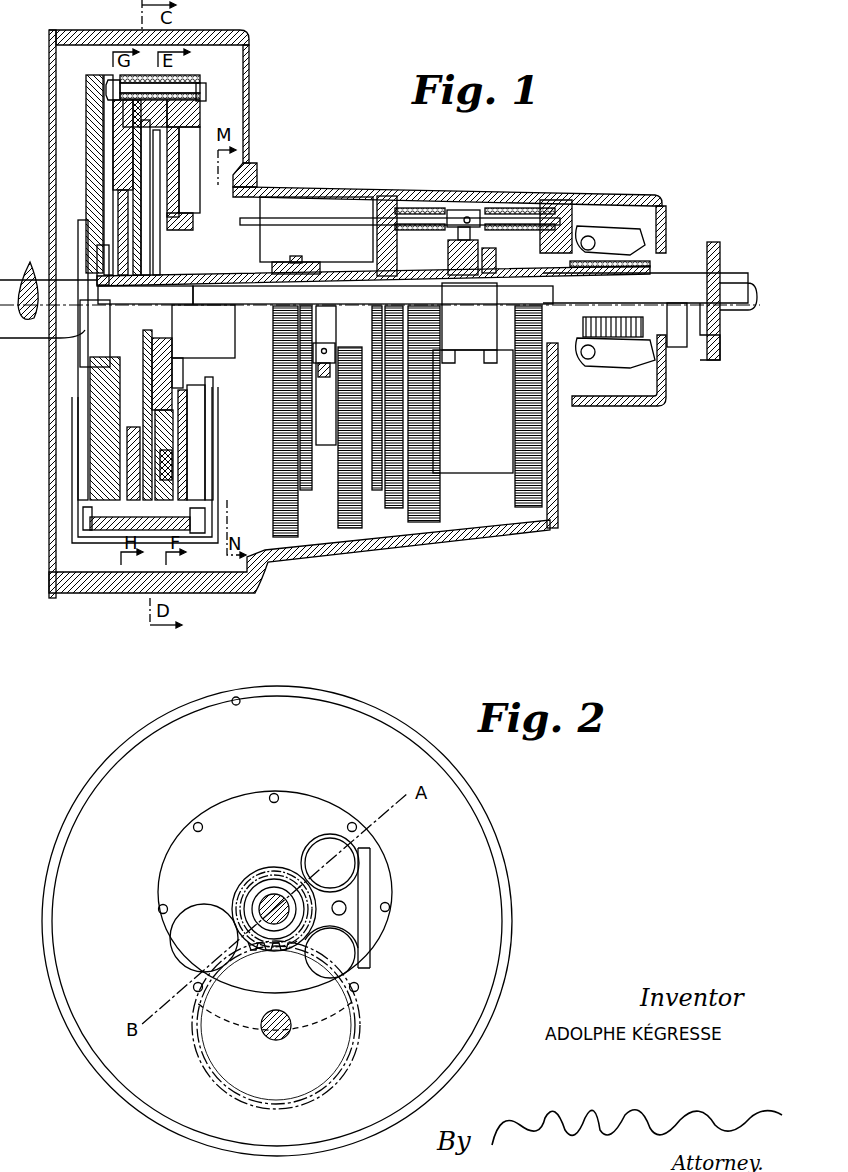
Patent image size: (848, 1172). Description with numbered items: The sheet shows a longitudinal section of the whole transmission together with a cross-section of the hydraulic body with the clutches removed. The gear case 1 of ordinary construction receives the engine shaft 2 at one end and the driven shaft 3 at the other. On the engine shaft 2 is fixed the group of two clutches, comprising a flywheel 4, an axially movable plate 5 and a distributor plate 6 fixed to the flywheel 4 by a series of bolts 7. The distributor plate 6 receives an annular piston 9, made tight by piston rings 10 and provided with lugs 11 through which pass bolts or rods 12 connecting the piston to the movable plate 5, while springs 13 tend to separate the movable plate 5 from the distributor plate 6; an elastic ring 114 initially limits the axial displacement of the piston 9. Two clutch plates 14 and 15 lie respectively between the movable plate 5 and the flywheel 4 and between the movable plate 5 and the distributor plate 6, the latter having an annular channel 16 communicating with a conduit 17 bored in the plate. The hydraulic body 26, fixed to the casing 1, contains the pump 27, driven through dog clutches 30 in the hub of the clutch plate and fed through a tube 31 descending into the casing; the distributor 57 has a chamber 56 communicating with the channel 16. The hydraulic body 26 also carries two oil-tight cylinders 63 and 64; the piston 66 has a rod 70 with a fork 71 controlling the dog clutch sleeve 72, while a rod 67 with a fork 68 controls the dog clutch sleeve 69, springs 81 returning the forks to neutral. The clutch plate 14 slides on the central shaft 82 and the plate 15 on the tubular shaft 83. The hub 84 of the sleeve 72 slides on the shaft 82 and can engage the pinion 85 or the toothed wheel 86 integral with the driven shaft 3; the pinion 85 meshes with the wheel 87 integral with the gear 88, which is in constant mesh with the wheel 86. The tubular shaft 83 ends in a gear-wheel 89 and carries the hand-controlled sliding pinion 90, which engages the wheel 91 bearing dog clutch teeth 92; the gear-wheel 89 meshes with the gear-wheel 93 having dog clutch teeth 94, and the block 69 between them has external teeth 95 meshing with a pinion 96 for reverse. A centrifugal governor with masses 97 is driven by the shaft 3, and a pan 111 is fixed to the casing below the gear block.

In FIG. 1, the gear case 1 is at (249, 46).
In FIG. 1, the engine shaft 2 is at (26, 287).
In FIG. 1, the driven shaft 3 is at (690, 273).
In FIG. 1, the flywheel 4 is at (90, 100).
In FIG. 1, the movable plate 5 is at (118, 132).
In FIG. 1, the distributor plate 6 is at (110, 82).
In FIG. 1, the bolts 7 is at (86, 521).
In FIG. 1, the annular piston 9 is at (202, 116).
In FIG. 1, the piston rings 10 is at (190, 522).
In FIG. 1, the lugs 11 is at (202, 84).
In FIG. 1, the bolts or rods 12 is at (172, 80).
In FIG. 1, the springs 13 is at (192, 102).
In FIG. 1, the clutch plate 14 is at (130, 146).
In FIG. 1, the clutch plate 15 is at (110, 186).
In FIG. 1, the annular channel 16 is at (84, 262).
In FIG. 1, the conduit 17 is at (145, 200).
In FIG. 1, the hydraulic body 26 is at (251, 170).
In FIG. 2, the hydraulic body 26 is at (231, 798).
In FIG. 1, the pump 27 is at (178, 291).
In FIG. 1, the dog clutches 30 is at (146, 291).
In FIG. 1, the tube 31 is at (247, 580).
In FIG. 1, the chamber 56 is at (286, 262).
In FIG. 1, the distributor 57 is at (97, 280).
In FIG. 2, the oil-tight cylinder 63 is at (341, 953).
In FIG. 1, the oil-tight cylinder 64 is at (260, 188).
In FIG. 2, the oil-tight cylinder 64 is at (345, 862).
In FIG. 1, the piston 66 is at (247, 220).
In FIG. 1, the rod 67 is at (344, 348).
In FIG. 1, the fork 68 is at (350, 356).
In FIG. 1, the dog clutch sleeve 69 is at (368, 498).
In FIG. 1, the rod 70 is at (330, 222).
In FIG. 1, the fork 71 is at (452, 236).
In FIG. 1, the dog clutch sleeve 72 is at (470, 230).
In FIG. 1, the springs 81 is at (422, 211).
In FIG. 1, the central shaft 82 is at (230, 298).
In FIG. 1, the tubular shaft 83 is at (341, 274).
In FIG. 1, the hub 84 is at (490, 262).
In FIG. 1, the pinion 85 is at (447, 386).
In FIG. 1, the toothed wheel 86 is at (528, 322).
In FIG. 1, the wheel 87 is at (437, 495).
In FIG. 1, the gear 88 is at (523, 470).
In FIG. 1, the gear-wheel 89 is at (386, 198).
In FIG. 1, the pinion 90 is at (300, 259).
In FIG. 2, the pinion 90 is at (250, 892).
In FIG. 1, the wheel 91 is at (288, 540).
In FIG. 2, the wheel 91 is at (344, 1074).
In FIG. 1, the dog clutch teeth 92 is at (308, 496).
In FIG. 1, the gear-wheel 93 is at (432, 482).
In FIG. 1, the dog clutch teeth 94 is at (390, 513).
In FIG. 1, the external teeth 95 is at (350, 530).
In FIG. 2, the pinion 96 is at (178, 941).
In FIG. 1, the masses 97 is at (622, 233).
In FIG. 1, the pan 111 is at (72, 466).
In FIG. 1, the elastic ring 114 is at (210, 360).